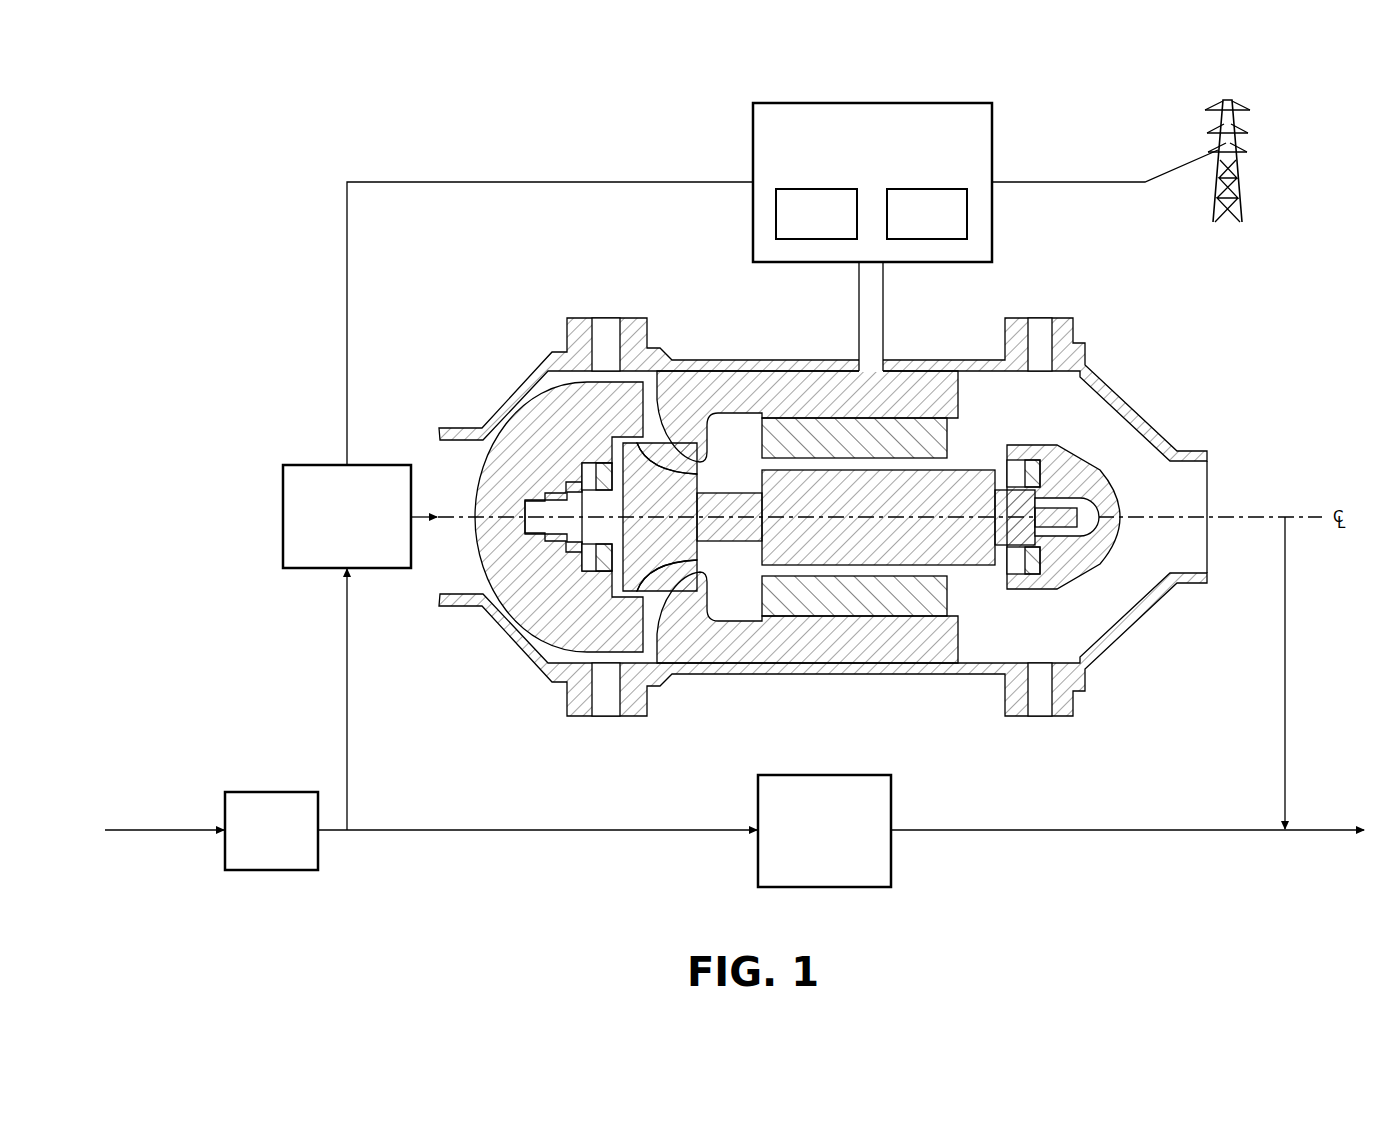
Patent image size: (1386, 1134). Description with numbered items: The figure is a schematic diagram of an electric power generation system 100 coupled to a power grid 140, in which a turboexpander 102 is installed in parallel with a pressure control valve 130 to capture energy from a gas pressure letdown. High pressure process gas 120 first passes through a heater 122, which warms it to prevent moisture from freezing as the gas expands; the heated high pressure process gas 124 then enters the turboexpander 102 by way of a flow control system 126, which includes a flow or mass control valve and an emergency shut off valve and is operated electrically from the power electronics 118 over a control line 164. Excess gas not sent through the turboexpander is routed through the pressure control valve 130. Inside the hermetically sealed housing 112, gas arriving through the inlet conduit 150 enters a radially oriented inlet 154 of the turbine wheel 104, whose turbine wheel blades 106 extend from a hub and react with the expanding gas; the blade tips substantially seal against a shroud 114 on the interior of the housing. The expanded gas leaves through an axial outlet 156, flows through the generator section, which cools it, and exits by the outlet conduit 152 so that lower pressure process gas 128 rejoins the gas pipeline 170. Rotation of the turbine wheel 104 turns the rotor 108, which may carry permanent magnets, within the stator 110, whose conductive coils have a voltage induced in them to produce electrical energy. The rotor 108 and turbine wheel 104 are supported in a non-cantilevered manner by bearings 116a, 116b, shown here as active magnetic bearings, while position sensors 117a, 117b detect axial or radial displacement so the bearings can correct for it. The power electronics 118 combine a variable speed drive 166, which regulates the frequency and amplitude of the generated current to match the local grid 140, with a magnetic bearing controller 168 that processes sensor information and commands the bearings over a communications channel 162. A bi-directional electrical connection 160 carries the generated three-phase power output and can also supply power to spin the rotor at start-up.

The electric power generation system 100 is at (235, 162).
The turboexpander 102 is at (486, 358).
The turbine wheel 104 is at (632, 582).
The turbine wheel blades 106 is at (682, 572).
The rotor 108 is at (960, 555).
The stator 110 is at (835, 453).
The turboexpander housing 112 is at (912, 676).
The shroud 114 is at (668, 578).
The bearing 116a is at (597, 566).
The bearing 116b is at (1017, 475).
The position sensor 117a is at (612, 578).
The position sensor 117b is at (1037, 470).
The power electronics 118 is at (851, 170).
The high pressure process gas 120 is at (178, 832).
The heater 122 is at (250, 856).
The heated high pressure process gas 124 is at (345, 666).
The flow control system 126 is at (326, 556).
The lower pressure process gas 128 is at (1283, 680).
The pressure control valve 130 is at (803, 872).
The power grid 140 is at (1215, 200).
The inlet conduit 150 is at (438, 456).
The outlet conduit 152 is at (1212, 490).
The radial gas inlet 154 is at (655, 414).
The axial gas outlet 156 is at (708, 478).
The bi-directional electrical connection 160 is at (884, 318).
The communications channel 162 is at (858, 318).
The control line 164 is at (487, 182).
The variable speed drive 166 is at (906, 226).
The magnetic bearing controller 168 is at (795, 226).
The gas pipeline 170 is at (1093, 832).